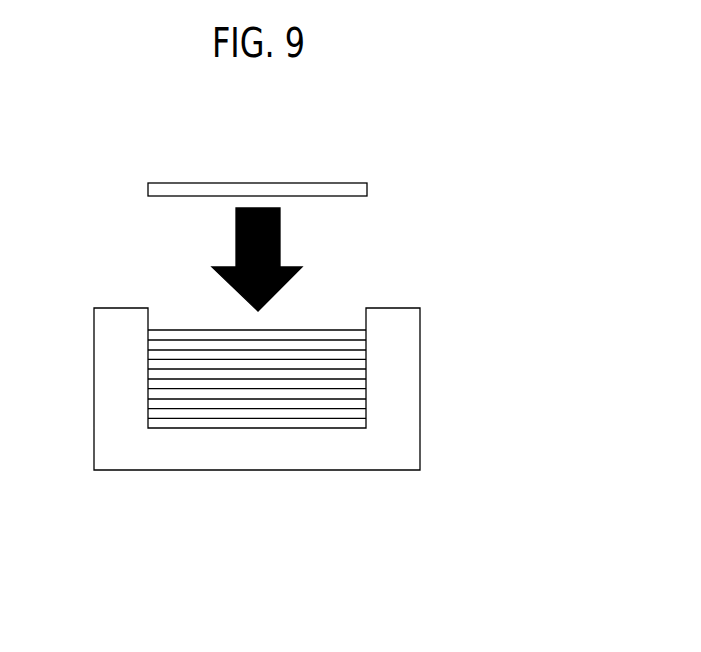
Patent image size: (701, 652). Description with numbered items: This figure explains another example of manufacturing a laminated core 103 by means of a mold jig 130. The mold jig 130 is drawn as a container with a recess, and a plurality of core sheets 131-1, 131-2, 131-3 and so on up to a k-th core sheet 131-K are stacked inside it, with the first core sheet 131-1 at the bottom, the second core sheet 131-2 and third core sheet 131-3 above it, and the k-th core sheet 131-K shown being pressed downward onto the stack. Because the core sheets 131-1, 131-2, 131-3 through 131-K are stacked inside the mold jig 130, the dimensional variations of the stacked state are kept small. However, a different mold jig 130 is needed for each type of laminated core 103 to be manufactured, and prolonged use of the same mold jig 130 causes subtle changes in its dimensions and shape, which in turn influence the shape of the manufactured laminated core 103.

The laminated core 103 is at (450, 218).
The mold jig 130 is at (397, 372).
The core sheet 131-K is at (311, 188).
The core sheet 131-1 is at (190, 423).
The core sheet 131-2 is at (243, 415).
The core sheet 131-3 is at (298, 407).